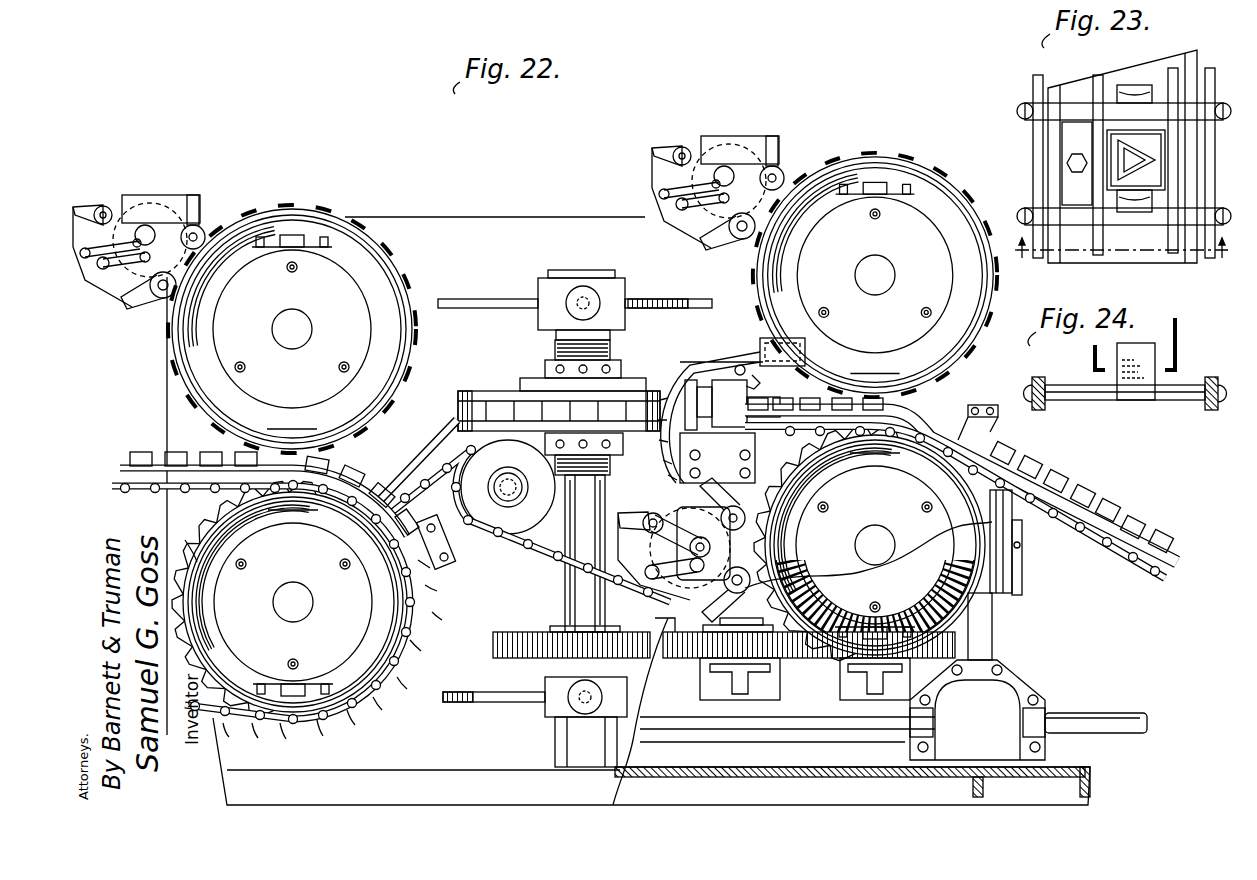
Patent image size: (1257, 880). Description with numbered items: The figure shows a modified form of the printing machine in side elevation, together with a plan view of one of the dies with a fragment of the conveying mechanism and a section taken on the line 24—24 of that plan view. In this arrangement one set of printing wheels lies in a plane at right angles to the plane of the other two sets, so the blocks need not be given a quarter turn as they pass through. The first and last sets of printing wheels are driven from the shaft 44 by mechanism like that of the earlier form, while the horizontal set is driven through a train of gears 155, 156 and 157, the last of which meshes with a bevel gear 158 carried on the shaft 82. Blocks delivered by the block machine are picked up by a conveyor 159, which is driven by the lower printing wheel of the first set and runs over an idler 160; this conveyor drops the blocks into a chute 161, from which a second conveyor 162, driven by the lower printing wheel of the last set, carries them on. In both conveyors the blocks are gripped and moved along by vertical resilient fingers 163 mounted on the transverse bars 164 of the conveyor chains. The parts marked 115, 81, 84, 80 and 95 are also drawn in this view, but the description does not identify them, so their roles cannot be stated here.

In FIG. 22, the roller lever assembly 115 is at (168, 206).
In FIG. 22, the upper feed wheel 81 is at (163, 356).
In FIG. 22, the wheel hub 84 is at (272, 337).
In FIG. 22, the shaft 82 is at (308, 573).
In FIG. 22, the carrier plate 80 is at (197, 562).
In FIG. 23, the carrier plate 80 is at (1197, 60).
In FIG. 22, the conveyor 162 is at (148, 470).
In FIG. 22, the chute 161 is at (420, 462).
In FIG. 22, the idler 160 is at (505, 536).
In FIG. 22, the gear 155 is at (672, 636).
In FIG. 22, the gear 156 is at (695, 660).
In FIG. 22, the gear 157 is at (830, 660).
In FIG. 22, the bevel gear 158 is at (962, 568).
In FIG. 22, the bearing housing 95 is at (1012, 589).
In FIG. 22, the shaft 44 is at (1106, 734).
In FIG. 22, the conveyor 159 is at (1150, 497).
In FIG. 23, the conveyor 159 is at (1175, 165).
In FIG. 24, the conveyor 159 is at (1093, 365).
In FIG. 22, the vertical resilient fingers 163 is at (1015, 448).
In FIG. 23, the vertical resilient fingers 163 is at (1125, 92).
In FIG. 24, the vertical resilient fingers 163 is at (1137, 375).
In FIG. 22, the transverse bars 164 is at (995, 498).
In FIG. 23, the transverse bars 164 is at (1050, 112).
In FIG. 24, the transverse bars 164 is at (1095, 401).
In FIG. 23, the line 24— 24 is at (1119, 255).